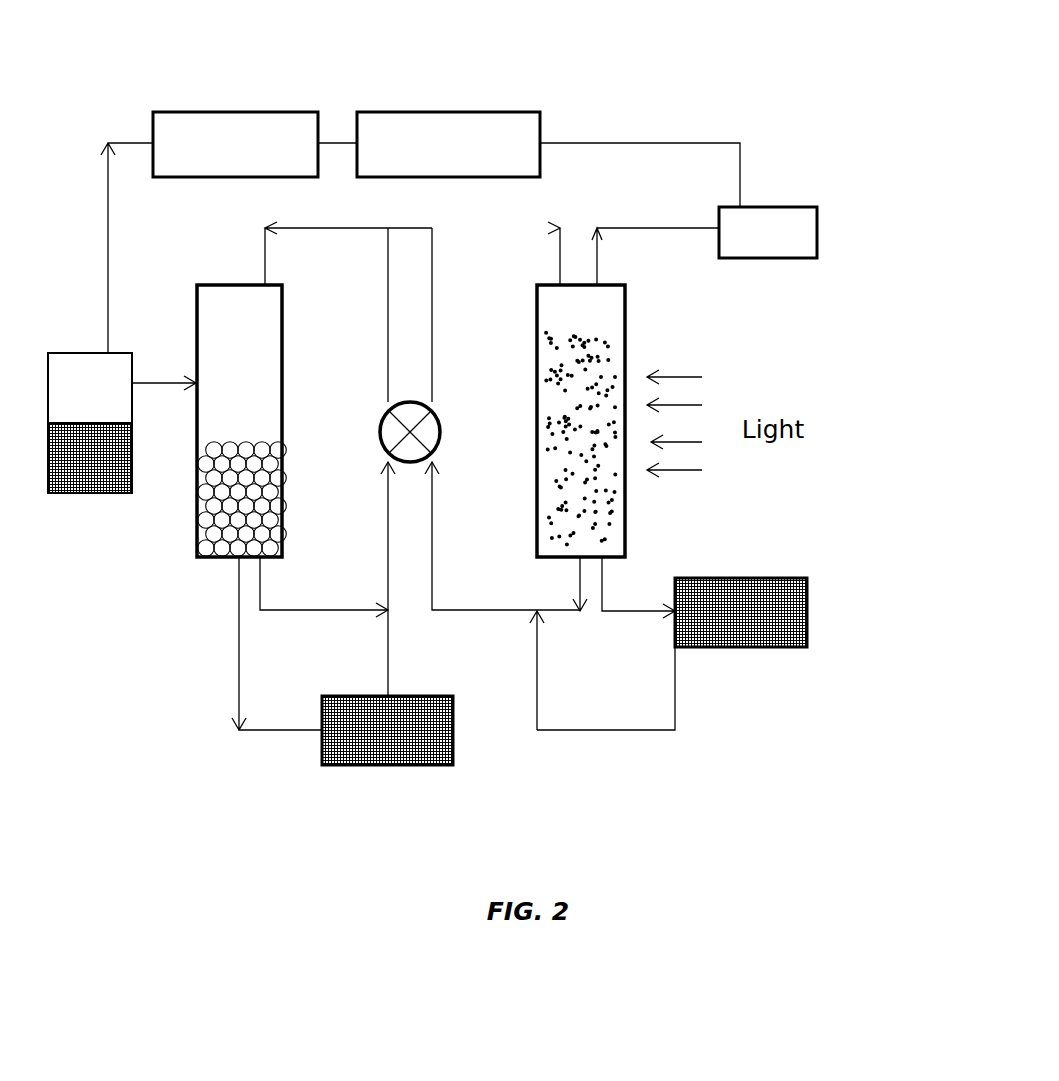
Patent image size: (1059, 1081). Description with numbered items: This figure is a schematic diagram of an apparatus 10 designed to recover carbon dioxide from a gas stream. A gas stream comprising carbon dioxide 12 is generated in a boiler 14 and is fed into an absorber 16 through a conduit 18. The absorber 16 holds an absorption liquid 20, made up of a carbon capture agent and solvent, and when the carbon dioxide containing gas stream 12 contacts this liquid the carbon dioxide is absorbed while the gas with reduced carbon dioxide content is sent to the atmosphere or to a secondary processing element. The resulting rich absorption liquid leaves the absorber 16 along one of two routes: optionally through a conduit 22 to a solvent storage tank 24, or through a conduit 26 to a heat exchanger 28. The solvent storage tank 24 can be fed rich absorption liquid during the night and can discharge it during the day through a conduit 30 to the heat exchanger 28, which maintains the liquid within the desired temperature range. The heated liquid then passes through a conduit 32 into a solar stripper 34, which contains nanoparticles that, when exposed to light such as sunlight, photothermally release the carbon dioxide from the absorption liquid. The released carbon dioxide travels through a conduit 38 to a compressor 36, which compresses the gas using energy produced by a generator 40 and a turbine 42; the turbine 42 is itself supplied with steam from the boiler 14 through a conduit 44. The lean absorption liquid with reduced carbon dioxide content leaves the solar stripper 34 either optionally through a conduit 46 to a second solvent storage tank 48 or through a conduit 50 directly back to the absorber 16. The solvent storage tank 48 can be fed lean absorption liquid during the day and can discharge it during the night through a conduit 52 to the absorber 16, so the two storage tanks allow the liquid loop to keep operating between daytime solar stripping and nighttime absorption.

The apparatus 10 is at (661, 74).
The gas stream comprising CO2 12 is at (75, 385).
The boiler 14 is at (85, 493).
The absorber 16 is at (265, 312).
The conduit 18 is at (158, 383).
The absorption liquid 20 is at (272, 532).
The conduit 22 is at (239, 588).
The solvent storage tank 24 is at (367, 753).
The conduit 26 is at (332, 610).
The heat exchanger 28 is at (430, 432).
The conduit 30 is at (388, 655).
The conduit 32 is at (477, 228).
The solar stripper 34 is at (608, 311).
The compressor 36 is at (767, 207).
The conduit 38 is at (663, 228).
The generator 40 is at (448, 112).
The turbine 42 is at (290, 112).
The conduit 44 is at (108, 228).
The conduit 46 is at (637, 611).
The solvent storage tank 48 is at (720, 638).
The conduit 50 is at (497, 611).
The conduit 52 is at (608, 730).